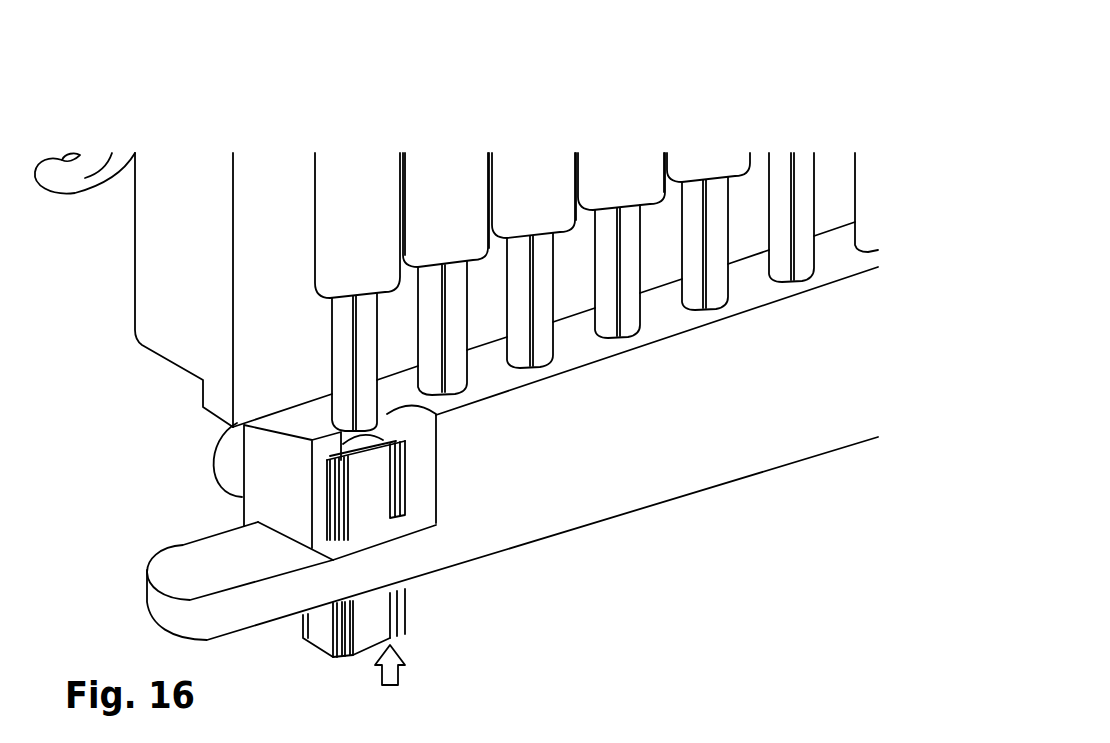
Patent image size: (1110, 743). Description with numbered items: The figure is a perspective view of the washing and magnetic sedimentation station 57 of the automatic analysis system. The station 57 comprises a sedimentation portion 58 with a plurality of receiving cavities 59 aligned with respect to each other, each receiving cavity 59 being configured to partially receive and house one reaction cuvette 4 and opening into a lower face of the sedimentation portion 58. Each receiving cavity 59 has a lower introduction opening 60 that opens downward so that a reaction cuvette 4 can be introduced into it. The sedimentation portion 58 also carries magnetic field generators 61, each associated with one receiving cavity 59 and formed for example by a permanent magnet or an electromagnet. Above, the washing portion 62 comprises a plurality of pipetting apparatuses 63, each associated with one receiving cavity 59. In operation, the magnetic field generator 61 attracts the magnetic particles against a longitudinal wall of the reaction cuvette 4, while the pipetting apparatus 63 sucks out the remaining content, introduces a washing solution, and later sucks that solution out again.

The reaction cuvette 4 is at (378, 487).
The washing and magnetic sedimentation station 57 is at (760, 154).
The sedimentation portion 58 is at (283, 473).
The receiving cavity 59 is at (330, 500).
The lower introduction opening 60 is at (345, 508).
The magnetic field generator 61 is at (235, 452).
The washing portion 62 is at (167, 220).
The pipetting apparatus 63 is at (343, 247).